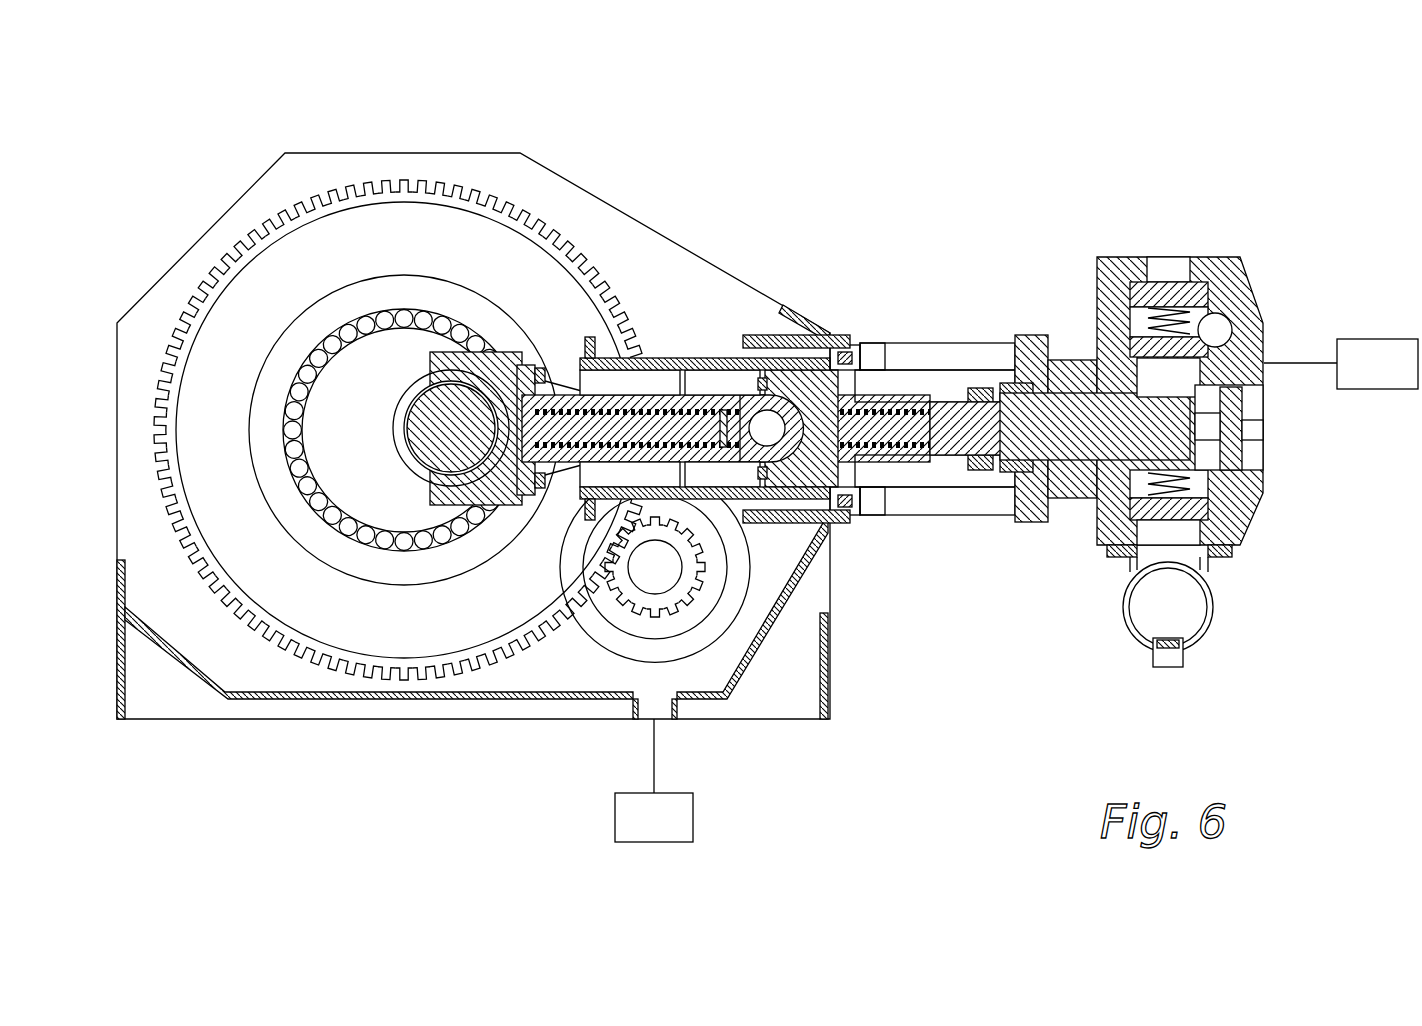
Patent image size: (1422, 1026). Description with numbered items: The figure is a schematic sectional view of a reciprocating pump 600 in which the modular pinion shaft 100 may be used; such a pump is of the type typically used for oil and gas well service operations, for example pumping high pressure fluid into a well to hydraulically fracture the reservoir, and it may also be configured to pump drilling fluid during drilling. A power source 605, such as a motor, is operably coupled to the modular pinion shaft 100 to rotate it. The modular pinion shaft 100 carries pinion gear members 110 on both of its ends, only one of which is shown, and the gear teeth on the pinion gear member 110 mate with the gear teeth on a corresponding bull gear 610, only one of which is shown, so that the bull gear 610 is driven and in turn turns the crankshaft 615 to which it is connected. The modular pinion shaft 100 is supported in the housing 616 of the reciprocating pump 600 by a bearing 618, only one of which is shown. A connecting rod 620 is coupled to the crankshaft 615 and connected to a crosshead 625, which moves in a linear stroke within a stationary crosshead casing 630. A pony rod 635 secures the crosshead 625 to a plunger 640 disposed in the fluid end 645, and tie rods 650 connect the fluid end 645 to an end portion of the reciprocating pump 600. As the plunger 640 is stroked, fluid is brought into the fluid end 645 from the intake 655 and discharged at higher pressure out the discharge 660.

The reciprocating pump 600 is at (907, 115).
The power source 605 is at (654, 780).
The bull gear 610 is at (552, 283).
The crankshaft 615 is at (445, 428).
The housing 616 is at (800, 590).
The bearing 618 is at (758, 557).
The connecting rod 620 is at (657, 397).
The crosshead 625 is at (800, 350).
The crosshead casing 630 is at (706, 370).
The pony rod 635 is at (903, 402).
The plunger 640 is at (1080, 403).
The fluid end 645 is at (1253, 287).
The tie rod 650 is at (963, 343).
The intake 655 is at (1213, 606).
The discharge 660 is at (1341, 364).
The modular pinion shaft 100 is at (647, 563).
The pinion gear member 110 is at (618, 592).